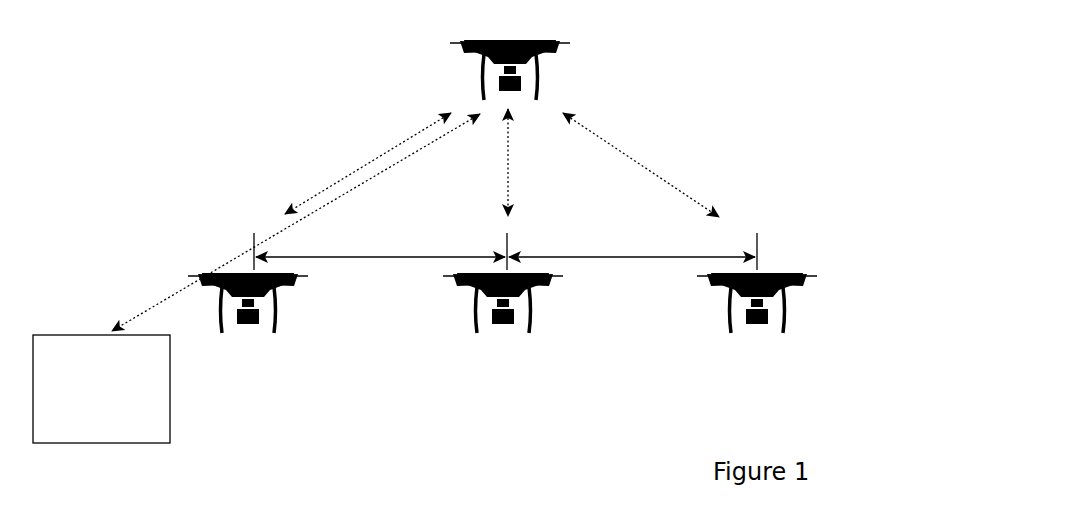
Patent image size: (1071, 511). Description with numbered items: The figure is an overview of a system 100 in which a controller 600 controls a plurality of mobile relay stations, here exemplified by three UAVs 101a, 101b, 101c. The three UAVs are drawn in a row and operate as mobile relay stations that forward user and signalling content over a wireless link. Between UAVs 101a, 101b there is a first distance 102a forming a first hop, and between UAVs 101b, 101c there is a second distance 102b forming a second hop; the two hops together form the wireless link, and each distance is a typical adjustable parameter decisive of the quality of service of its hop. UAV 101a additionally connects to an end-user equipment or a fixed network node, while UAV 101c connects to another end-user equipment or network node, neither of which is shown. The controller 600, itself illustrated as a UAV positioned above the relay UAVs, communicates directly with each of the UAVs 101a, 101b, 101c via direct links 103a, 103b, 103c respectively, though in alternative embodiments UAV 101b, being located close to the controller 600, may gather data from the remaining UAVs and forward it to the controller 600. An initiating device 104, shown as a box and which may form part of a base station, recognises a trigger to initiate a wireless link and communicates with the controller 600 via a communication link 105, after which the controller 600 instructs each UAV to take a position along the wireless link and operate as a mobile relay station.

The system 100 is at (165, 133).
The controller 600 is at (537, 83).
The UAV 101a is at (275, 323).
The UAV 101b is at (529, 325).
The UAV 101c is at (783, 325).
The first distance 102a is at (380, 251).
The second distance 102b is at (633, 251).
The direct link 103a is at (368, 163).
The direct link 103b is at (540, 162).
The direct link 103c is at (641, 165).
The initiating device 104 is at (170, 362).
The communication link 105 is at (292, 222).